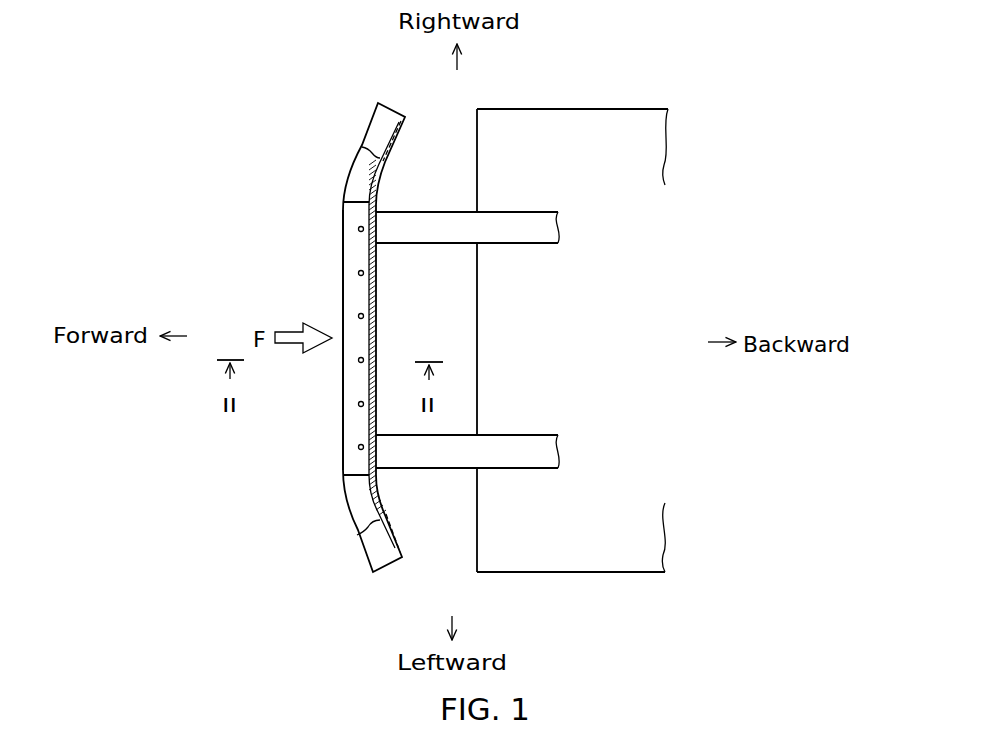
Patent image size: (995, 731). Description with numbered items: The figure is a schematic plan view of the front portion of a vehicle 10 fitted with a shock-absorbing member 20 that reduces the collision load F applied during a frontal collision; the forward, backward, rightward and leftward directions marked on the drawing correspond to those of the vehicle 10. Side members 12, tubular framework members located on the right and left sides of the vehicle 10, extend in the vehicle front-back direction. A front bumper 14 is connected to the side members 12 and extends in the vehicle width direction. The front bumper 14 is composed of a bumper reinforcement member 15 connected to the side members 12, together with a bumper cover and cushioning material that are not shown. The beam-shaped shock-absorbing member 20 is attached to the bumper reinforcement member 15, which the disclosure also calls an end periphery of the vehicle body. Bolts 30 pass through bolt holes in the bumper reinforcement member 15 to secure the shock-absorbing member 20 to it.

The vehicle 10 is at (645, 90).
The side member 12 is at (492, 226).
The front bumper 14 is at (328, 268).
The bumper reinforcement member 15 is at (373, 304).
The shock-absorbing member 20 is at (357, 382).
The bolt 30 is at (359, 229).